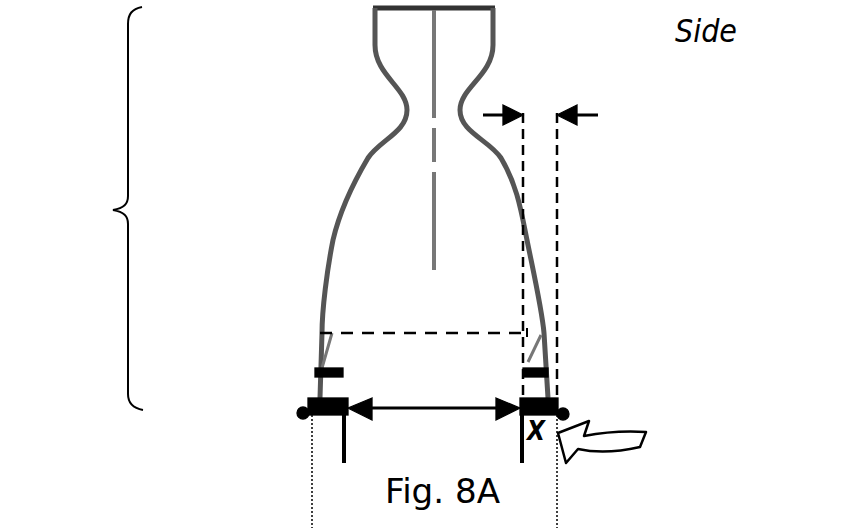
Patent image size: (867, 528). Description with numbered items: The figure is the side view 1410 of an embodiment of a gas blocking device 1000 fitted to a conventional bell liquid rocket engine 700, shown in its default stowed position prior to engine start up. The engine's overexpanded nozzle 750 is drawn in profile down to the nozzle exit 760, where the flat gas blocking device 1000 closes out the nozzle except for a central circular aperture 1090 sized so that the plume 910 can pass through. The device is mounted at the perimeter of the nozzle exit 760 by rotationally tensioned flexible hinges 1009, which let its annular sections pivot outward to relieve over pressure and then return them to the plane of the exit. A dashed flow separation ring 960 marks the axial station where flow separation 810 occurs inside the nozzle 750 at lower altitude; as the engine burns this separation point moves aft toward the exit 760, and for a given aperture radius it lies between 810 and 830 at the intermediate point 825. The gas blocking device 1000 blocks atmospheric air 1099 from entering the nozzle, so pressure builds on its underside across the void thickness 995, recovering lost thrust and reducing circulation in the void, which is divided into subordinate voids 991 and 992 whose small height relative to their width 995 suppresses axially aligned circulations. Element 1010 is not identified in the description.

The liquid rocket engine 700 is at (375, 18).
The nozzle 750 is at (365, 162).
The side view 1410 is at (96, 208).
The upper mounting clamp 1010 is at (320, 370).
The gas blocking device 1000 is at (312, 402).
The flexible hinge 1009 is at (297, 413).
The nozzle exit 760 is at (338, 416).
The flow separation ring 960 is at (493, 333).
The plume 910 is at (433, 366).
The central circular aperture 1090 is at (442, 410).
The void thickness 995 is at (541, 98).
The flow separation point 810 is at (535, 238).
The flow separation point 825 is at (527, 331).
The subordinate void 991 is at (540, 358).
The subordinate void 992 is at (540, 386).
The flow separation point 830 is at (558, 403).
The atmospheric air 1099 is at (635, 438).